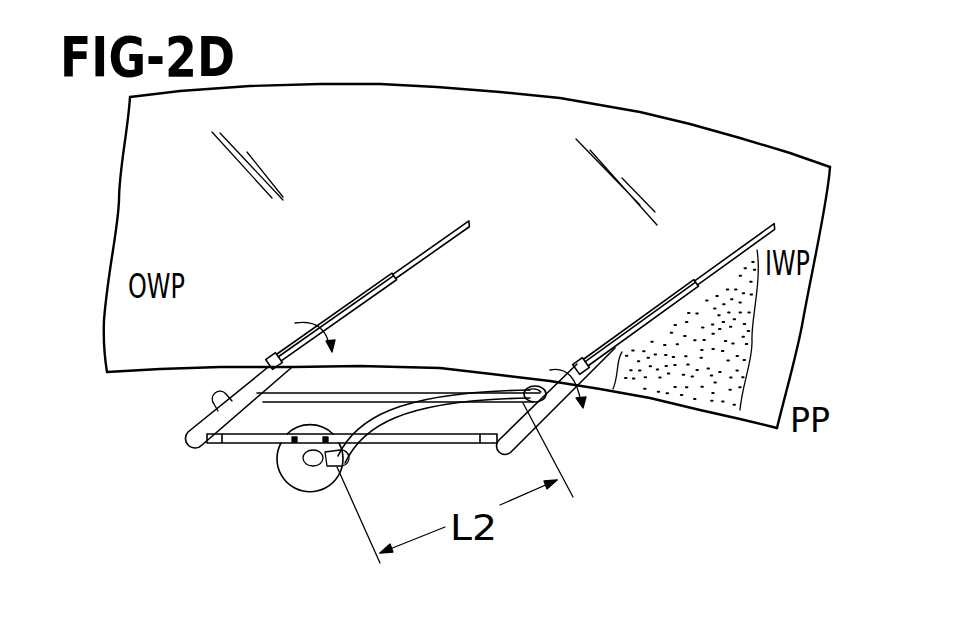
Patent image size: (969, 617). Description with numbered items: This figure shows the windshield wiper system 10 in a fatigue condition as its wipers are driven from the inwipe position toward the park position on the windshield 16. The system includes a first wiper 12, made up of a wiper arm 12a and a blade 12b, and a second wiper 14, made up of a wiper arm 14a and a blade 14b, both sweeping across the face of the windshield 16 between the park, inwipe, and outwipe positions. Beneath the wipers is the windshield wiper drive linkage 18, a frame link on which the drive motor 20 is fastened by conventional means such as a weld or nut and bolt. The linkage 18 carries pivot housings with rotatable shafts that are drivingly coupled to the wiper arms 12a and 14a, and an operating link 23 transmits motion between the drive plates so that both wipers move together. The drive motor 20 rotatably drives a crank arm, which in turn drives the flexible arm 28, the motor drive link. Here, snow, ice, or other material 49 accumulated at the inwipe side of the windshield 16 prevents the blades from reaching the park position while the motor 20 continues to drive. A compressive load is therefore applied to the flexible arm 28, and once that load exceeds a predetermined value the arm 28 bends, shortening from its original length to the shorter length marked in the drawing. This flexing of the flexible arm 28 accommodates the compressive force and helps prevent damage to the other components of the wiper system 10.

The windshield wiper system 10 is at (227, 452).
The first wiper 12 is at (640, 279).
The wiper arm 12a is at (613, 343).
The blade 12b is at (727, 253).
The second wiper 14 is at (334, 266).
The wiper arm 14a is at (288, 355).
The blade 14b is at (433, 243).
The windshield 16 is at (437, 93).
The windshield wiper drive linkage 18 is at (258, 444).
The drive motor 20 is at (307, 477).
The operating link 23 is at (436, 386).
The flexible arm 28 is at (467, 388).
The snow, ice or other material 49 is at (692, 396).